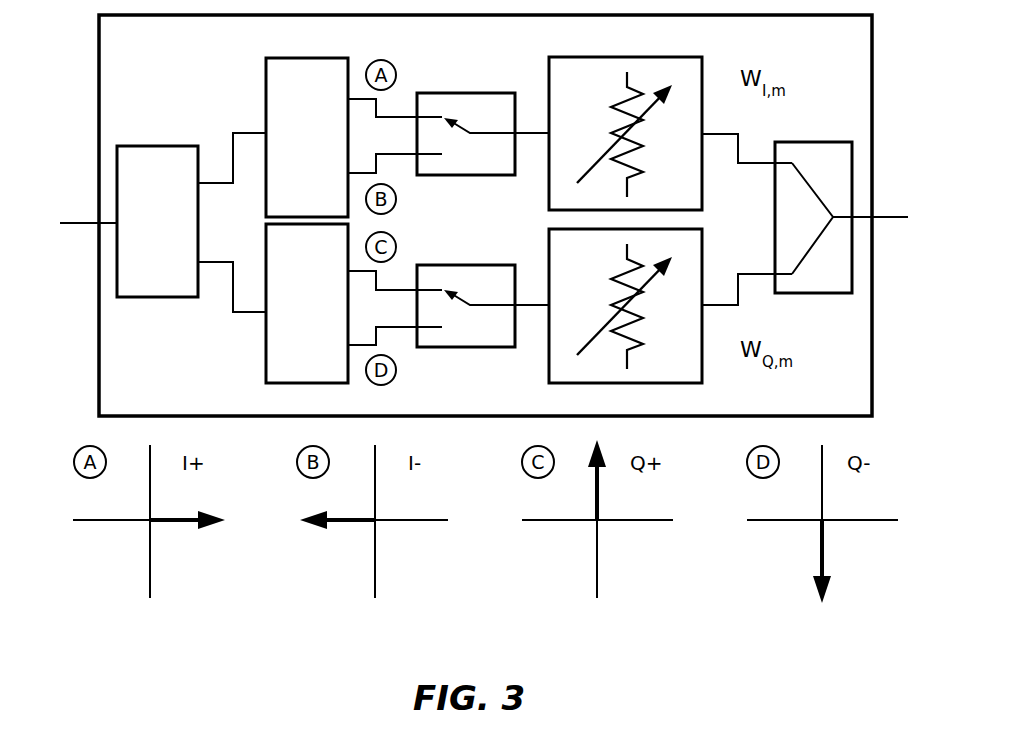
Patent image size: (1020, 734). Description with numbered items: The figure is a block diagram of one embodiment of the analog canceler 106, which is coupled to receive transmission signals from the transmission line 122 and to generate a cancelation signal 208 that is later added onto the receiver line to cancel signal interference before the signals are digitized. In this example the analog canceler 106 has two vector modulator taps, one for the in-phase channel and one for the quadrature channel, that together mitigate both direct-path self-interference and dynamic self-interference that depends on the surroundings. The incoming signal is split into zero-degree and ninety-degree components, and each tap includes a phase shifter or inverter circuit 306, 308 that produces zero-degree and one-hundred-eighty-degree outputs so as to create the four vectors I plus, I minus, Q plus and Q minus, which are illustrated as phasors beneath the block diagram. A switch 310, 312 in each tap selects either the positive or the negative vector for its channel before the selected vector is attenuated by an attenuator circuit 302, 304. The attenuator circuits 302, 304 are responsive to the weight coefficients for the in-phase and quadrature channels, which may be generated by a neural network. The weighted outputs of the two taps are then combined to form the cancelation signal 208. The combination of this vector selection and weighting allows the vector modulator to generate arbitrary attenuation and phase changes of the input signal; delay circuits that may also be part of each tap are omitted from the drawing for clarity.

The analog canceler 106 is at (856, 52).
The transmission line 122 is at (80, 222).
The cancelation signal 208 is at (895, 217).
The attenuator circuit 302 is at (597, 263).
The attenuator circuit 304 is at (597, 89).
The phase shifter or inverter circuit 306 is at (312, 264).
The phase shifter or inverter circuit 308 is at (312, 91).
The switch 310 is at (505, 341).
The switch 312 is at (505, 169).